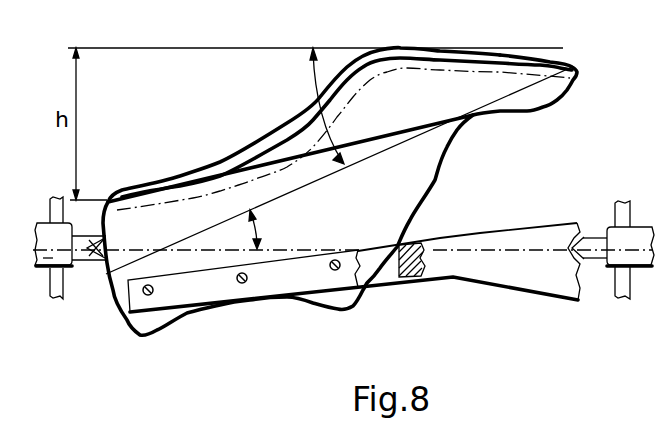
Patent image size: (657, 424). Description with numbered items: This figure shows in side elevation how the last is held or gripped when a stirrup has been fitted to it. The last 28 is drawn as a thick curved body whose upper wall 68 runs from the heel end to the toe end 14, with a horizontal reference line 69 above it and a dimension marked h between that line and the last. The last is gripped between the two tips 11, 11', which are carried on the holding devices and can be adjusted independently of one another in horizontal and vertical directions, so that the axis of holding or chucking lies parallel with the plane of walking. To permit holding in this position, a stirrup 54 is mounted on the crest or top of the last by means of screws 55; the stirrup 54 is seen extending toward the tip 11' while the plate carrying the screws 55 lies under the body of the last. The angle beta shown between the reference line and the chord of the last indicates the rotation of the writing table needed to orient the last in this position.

The upper reference line 69 is at (163, 48).
The inner wall of body 68 is at (228, 176).
The body 28 is at (378, 203).
The end portion 14 is at (533, 87).
The tip 11 is at (71, 251).
The tip 11' is at (613, 267).
The stirrup 54 is at (469, 286).
The screws 55 is at (333, 270).